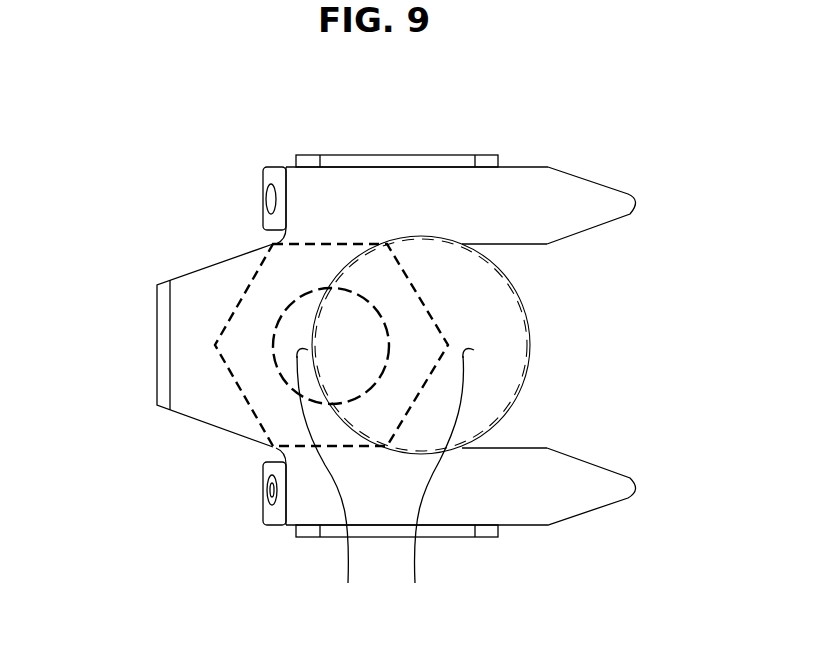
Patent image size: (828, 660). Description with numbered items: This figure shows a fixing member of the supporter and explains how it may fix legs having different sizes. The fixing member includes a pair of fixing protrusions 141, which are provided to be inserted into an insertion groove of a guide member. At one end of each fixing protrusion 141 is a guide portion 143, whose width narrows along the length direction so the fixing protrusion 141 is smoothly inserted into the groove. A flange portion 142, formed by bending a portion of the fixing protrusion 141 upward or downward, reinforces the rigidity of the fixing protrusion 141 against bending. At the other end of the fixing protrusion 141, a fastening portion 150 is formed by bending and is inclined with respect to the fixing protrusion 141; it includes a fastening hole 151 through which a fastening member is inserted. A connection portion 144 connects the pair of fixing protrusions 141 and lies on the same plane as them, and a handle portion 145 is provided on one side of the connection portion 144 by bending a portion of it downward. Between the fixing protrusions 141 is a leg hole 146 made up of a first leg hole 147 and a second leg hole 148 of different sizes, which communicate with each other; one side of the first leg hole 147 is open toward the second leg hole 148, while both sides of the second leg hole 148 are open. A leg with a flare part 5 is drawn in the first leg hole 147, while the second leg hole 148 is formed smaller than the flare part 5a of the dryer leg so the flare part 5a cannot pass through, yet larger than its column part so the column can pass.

The flare part 5 is at (250, 288).
The flare part 5a is at (517, 292).
The fixing protrusion 141 is at (437, 187).
The flange portion 142 is at (374, 160).
The guide portion 143 is at (610, 198).
The connection portion 144 is at (207, 407).
The handle portion 145 is at (157, 336).
The leg hole 146 is at (385, 495).
The first leg hole 147 is at (331, 479).
The second leg hole 148 is at (436, 479).
The fastening portion 150 is at (273, 517).
The fastening hole 151 is at (268, 490).